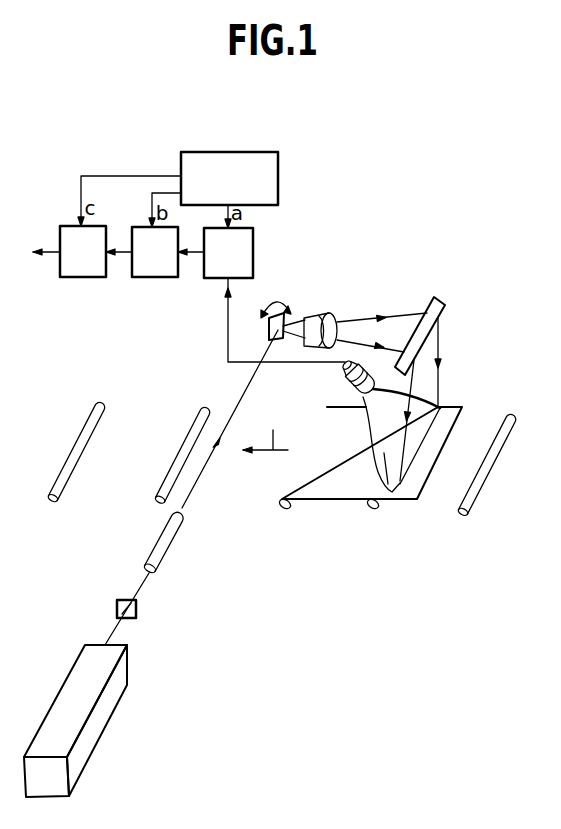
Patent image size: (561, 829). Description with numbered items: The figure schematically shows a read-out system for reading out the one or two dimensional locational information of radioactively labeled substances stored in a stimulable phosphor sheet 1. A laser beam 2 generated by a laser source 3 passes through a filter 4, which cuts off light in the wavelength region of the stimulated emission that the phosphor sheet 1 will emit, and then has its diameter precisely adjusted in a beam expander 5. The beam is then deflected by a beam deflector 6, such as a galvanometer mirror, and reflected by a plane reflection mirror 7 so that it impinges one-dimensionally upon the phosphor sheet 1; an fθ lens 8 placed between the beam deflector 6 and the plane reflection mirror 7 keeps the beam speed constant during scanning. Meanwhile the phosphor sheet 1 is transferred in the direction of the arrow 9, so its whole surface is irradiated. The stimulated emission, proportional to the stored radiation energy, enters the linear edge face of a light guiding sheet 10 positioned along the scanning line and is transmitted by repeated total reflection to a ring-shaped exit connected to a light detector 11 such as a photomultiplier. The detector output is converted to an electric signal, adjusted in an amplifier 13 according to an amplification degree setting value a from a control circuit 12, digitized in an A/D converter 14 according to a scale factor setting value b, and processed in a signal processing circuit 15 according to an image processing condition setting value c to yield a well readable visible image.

The stimulable phosphor sheet 1 is at (421, 472).
The laser beam 2 is at (98, 720).
The laser source 3 is at (120, 628).
The filter 4 is at (139, 608).
The beam expander 5 is at (162, 548).
The beam deflector 6 is at (296, 315).
The plane reflection mirror 7 is at (438, 303).
The fθ lens 8 is at (342, 316).
The arrow 9 is at (266, 429).
The light guiding sheet 10 is at (423, 410).
The light detector 11 is at (348, 388).
The control circuit 12 is at (229, 178).
The amplifier 13 is at (228, 253).
The A/D converter 14 is at (155, 252).
The signal processing circuit 15 is at (83, 251).